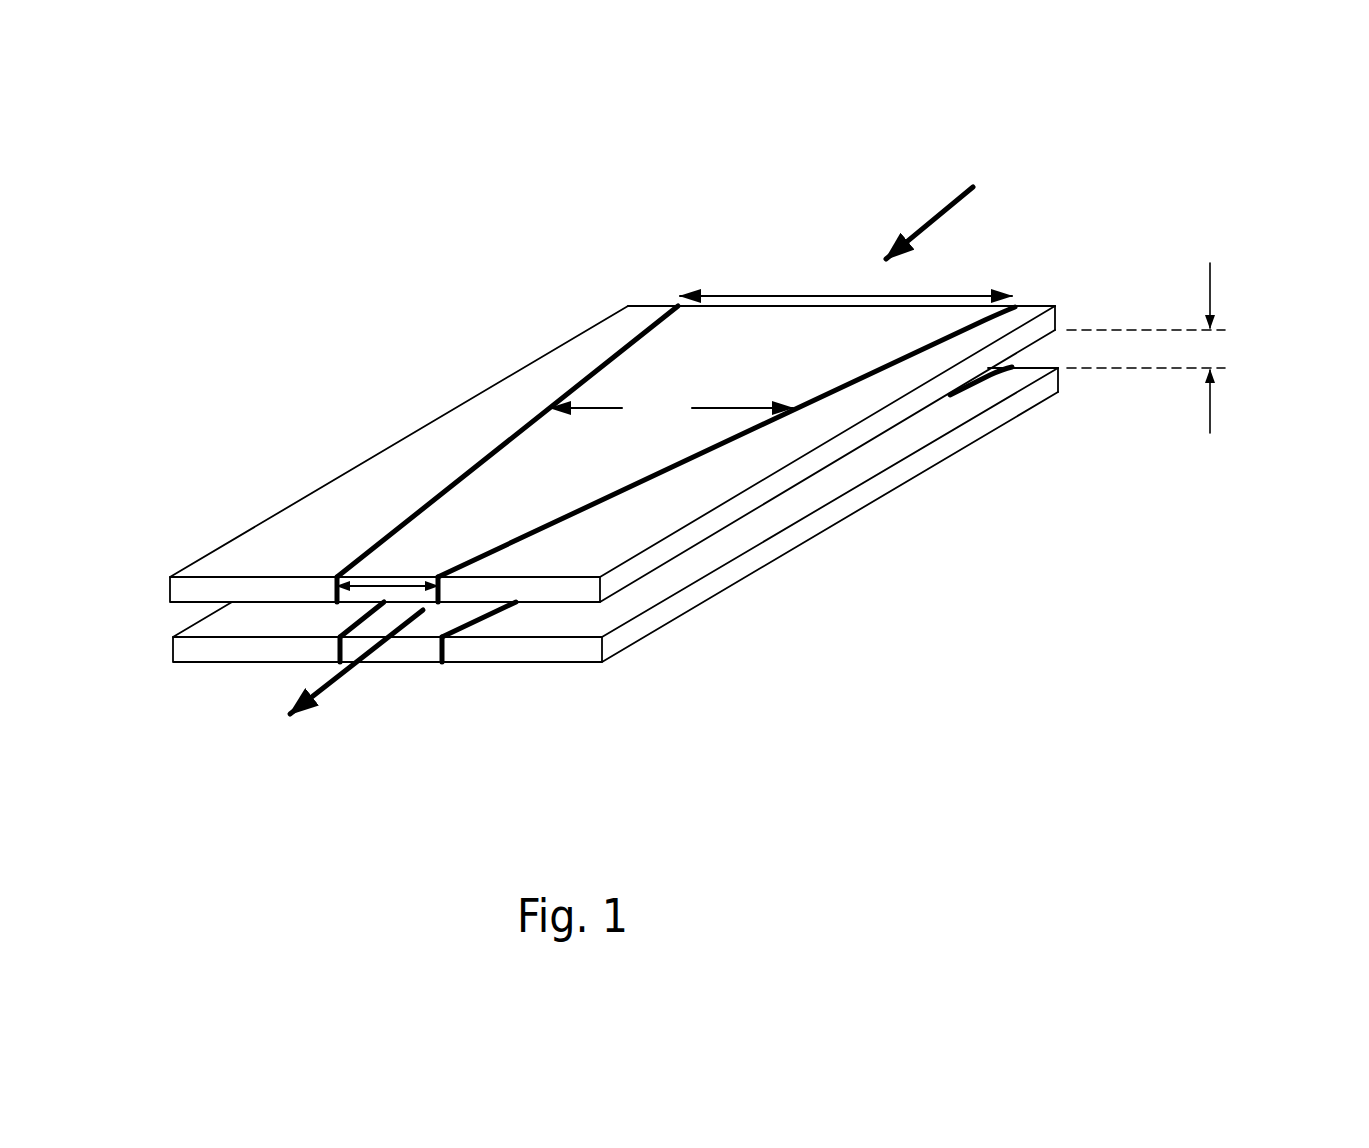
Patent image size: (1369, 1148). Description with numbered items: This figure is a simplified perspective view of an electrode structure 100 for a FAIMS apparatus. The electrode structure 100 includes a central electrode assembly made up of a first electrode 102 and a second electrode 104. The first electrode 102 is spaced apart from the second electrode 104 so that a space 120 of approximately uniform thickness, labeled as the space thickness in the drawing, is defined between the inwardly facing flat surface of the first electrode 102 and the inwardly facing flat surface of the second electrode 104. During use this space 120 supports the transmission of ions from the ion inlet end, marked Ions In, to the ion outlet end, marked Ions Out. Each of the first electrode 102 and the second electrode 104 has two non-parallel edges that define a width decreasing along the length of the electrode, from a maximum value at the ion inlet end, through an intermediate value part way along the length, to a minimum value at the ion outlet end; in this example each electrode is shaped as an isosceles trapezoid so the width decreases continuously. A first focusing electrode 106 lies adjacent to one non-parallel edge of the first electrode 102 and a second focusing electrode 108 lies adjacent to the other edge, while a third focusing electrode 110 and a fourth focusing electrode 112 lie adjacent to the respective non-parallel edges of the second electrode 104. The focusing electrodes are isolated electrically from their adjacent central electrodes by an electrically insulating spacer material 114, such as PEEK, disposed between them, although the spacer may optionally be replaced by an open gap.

The electrode structure 100 is at (293, 393).
The first electrode 102 is at (718, 320).
The second electrode 104 is at (420, 665).
The first focusing electrode 106 is at (402, 445).
The second focusing electrode 108 is at (730, 522).
The third focusing electrode 110 is at (188, 665).
The fourth focusing electrode 112 is at (698, 603).
The electrically insulating spacer material 114 is at (640, 330).
The space 120 is at (438, 618).